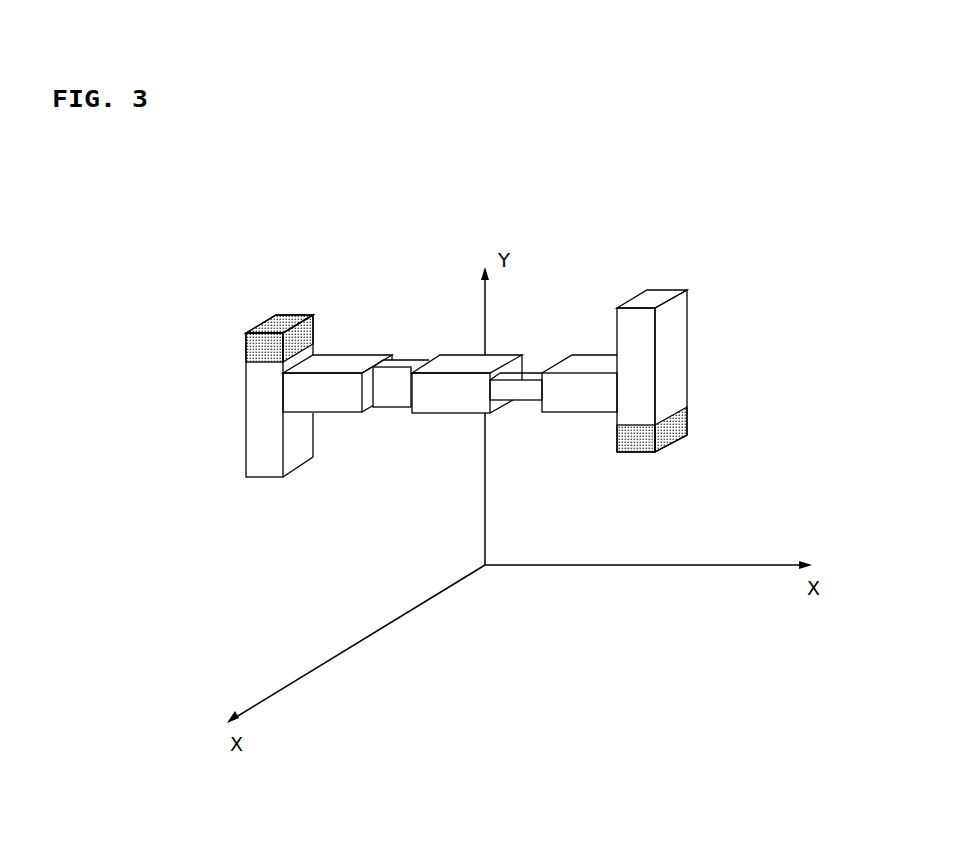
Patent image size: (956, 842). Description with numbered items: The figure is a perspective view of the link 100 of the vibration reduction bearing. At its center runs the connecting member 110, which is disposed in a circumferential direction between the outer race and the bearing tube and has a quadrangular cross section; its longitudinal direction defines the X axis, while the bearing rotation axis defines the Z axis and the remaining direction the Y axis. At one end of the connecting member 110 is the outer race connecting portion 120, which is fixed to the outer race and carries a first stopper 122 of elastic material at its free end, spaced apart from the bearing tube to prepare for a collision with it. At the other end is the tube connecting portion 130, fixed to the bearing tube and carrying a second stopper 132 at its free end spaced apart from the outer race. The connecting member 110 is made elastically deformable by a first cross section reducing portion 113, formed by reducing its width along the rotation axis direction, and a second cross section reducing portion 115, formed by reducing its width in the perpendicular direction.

The link 100 is at (238, 304).
The connecting member 110 is at (457, 405).
The first cross section reducing portion 113 is at (400, 375).
The second cross section reducing portion 115 is at (525, 393).
The outer race connecting portion 120 is at (260, 435).
The first stopper 122 is at (284, 323).
The tube connecting portion 130 is at (673, 338).
The second stopper 132 is at (642, 445).